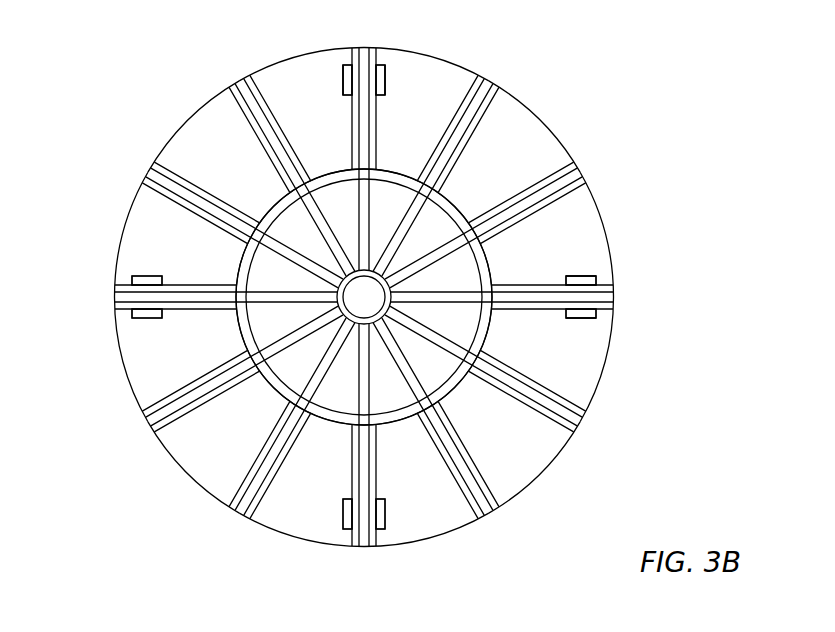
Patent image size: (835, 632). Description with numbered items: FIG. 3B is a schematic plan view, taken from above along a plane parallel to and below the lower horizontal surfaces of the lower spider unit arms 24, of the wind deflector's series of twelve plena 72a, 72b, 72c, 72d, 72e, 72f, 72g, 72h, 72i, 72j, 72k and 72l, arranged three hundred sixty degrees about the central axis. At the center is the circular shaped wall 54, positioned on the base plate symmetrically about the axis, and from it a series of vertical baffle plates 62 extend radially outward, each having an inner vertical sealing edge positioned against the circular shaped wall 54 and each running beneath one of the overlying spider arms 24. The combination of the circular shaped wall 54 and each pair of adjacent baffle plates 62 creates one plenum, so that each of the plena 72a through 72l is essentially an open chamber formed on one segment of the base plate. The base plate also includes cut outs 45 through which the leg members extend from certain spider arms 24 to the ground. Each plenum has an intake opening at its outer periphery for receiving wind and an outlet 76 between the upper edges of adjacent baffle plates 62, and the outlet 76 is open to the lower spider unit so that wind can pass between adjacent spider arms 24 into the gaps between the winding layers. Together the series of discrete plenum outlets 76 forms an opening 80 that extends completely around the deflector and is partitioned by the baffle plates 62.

The spider arm 24 is at (605, 285).
The cut out 45 is at (288, 88).
The circular shaped wall 54 is at (458, 212).
The vertical baffle plate 62 is at (385, 9).
The outlet 76 is at (334, 406).
The opening 80 is at (142, 344).
The plenum 72a is at (518, 329).
The plenum 72b is at (473, 398).
The plenum 72c is at (398, 442).
The plenum 72d is at (332, 442).
The plenum 72e is at (257, 398).
The plenum 72f is at (212, 329).
The plenum 72g is at (212, 265).
The plenum 72h is at (258, 189).
The plenum 72i is at (332, 149).
The plenum 72j is at (396, 149).
The plenum 72k is at (481, 185).
The plenum 72l is at (514, 265).